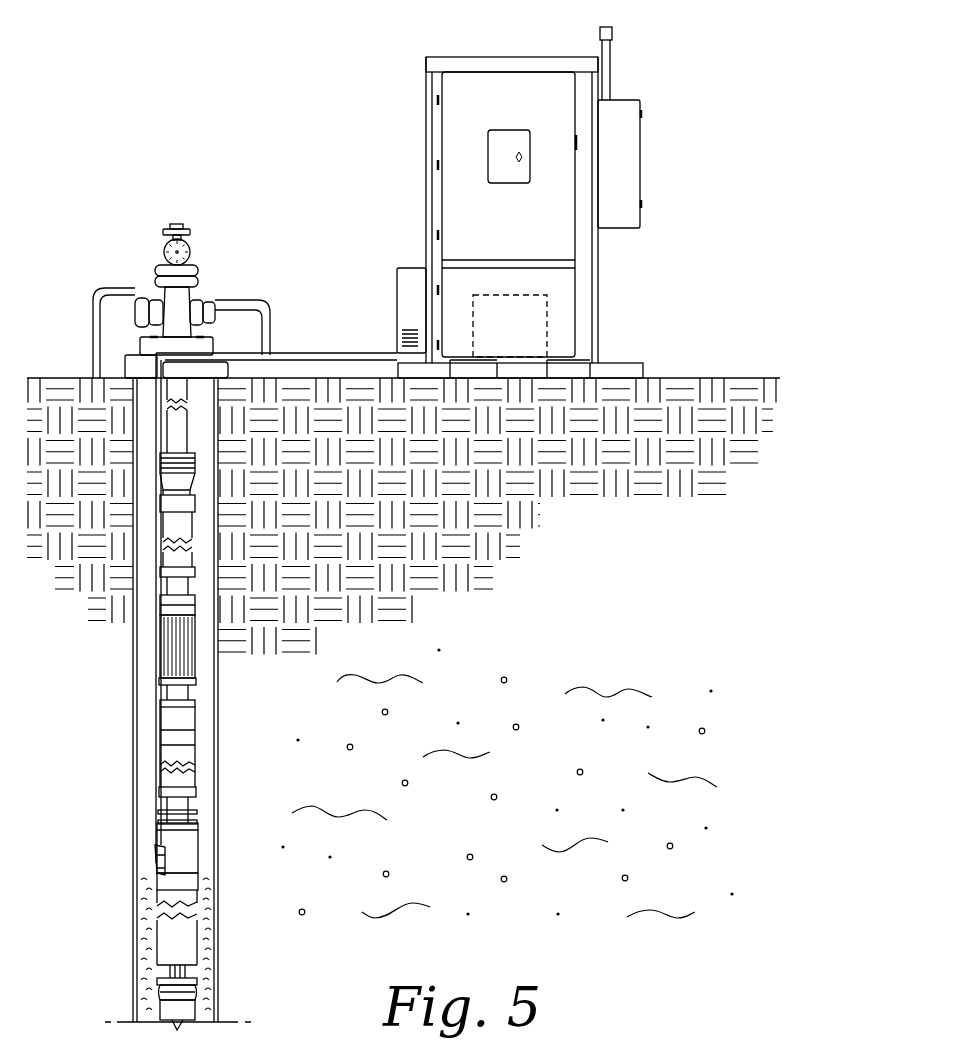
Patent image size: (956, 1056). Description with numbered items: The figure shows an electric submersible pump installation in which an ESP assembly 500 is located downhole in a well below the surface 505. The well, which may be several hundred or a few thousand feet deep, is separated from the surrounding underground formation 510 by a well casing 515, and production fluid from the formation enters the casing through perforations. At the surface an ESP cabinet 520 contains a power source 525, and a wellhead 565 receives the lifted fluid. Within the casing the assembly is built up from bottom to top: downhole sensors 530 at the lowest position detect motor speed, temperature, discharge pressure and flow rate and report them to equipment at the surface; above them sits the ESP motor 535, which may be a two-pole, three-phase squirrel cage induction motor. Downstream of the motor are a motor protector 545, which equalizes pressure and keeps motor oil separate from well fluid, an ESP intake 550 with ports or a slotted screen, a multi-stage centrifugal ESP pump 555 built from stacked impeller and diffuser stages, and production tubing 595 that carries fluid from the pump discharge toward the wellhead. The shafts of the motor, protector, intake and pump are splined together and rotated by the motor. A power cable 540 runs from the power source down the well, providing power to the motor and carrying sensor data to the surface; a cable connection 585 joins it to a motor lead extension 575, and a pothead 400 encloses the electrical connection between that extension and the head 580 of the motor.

The pothead 400 is at (155, 862).
The ESP assembly 500 is at (199, 621).
The surface 505 is at (660, 374).
The underground formation 510 is at (463, 825).
The well casing 515 is at (220, 792).
The ESP cabinet 520 is at (513, 93).
The power source 525 is at (526, 335).
The downhole sensors 530 is at (185, 1008).
The ESP motor 535 is at (185, 925).
The power cable 540 is at (340, 353).
The motor protector 545 is at (170, 733).
The ESP intake 550 is at (170, 650).
The ESP pump 555 is at (168, 528).
The wellhead 565 is at (172, 318).
The motor lead extension 575 is at (157, 810).
The head of motor 580 is at (180, 858).
The cable connection 585 is at (156, 462).
The production tubing 595 is at (184, 425).